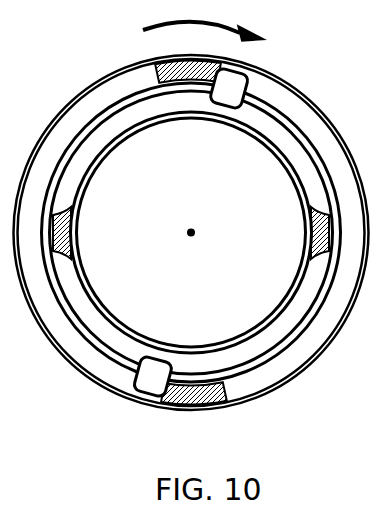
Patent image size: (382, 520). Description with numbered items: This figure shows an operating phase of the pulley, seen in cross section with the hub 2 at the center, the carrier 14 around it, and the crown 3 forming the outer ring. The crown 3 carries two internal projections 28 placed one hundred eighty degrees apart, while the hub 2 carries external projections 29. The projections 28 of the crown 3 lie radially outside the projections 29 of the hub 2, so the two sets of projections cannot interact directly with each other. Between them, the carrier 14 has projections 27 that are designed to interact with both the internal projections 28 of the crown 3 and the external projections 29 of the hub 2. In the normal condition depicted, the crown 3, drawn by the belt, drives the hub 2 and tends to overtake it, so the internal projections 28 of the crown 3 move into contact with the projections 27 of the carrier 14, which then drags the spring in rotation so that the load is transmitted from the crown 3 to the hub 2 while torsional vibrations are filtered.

The hub 2 is at (117, 306).
The crown 3 is at (67, 113).
The carrier 14 is at (300, 282).
The projections of carrier 27 is at (231, 88).
The internal projections of crown 28 is at (184, 76).
The external projections of hub 29 is at (72, 230).